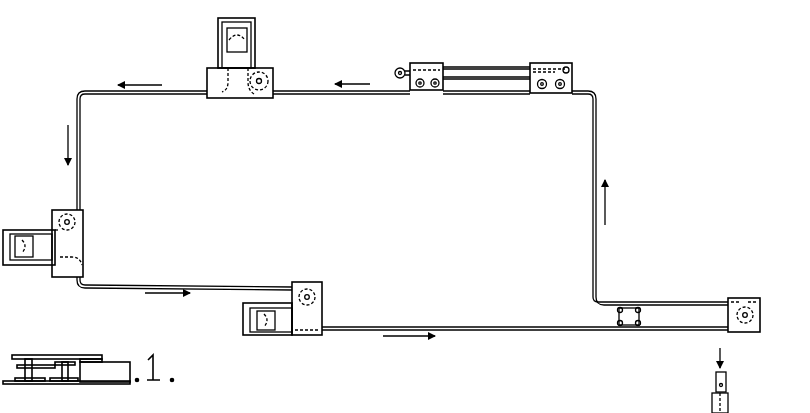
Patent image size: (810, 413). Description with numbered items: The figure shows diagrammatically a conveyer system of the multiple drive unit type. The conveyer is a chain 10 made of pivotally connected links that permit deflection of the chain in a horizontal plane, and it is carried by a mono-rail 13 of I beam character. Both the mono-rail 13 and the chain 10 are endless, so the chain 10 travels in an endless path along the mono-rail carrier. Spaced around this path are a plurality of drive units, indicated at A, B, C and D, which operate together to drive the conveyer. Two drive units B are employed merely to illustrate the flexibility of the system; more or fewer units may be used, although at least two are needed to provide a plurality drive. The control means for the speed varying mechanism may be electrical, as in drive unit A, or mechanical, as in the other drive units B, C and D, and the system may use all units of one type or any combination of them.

The chain 10 is at (500, 329).
The mono-rail 13 is at (728, 408).
The drive unit A is at (257, 58).
The drive unit B is at (162, 268).
The drive unit C is at (689, 302).
The drive unit D is at (483, 62).